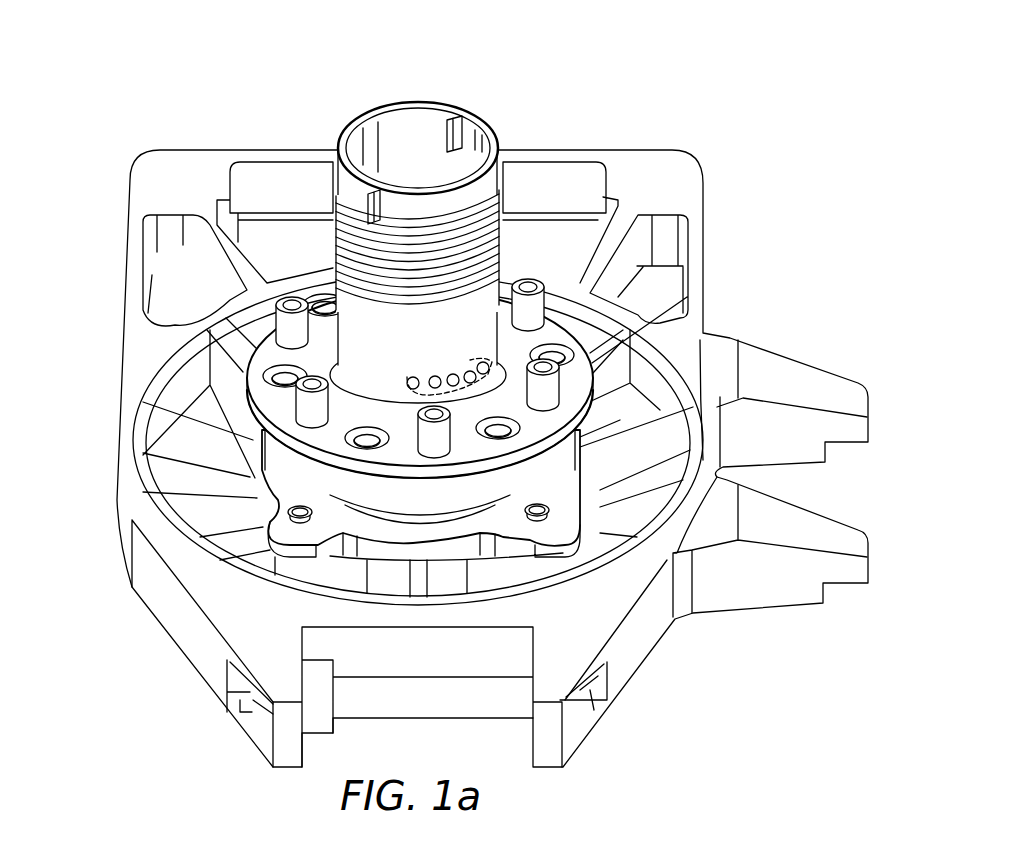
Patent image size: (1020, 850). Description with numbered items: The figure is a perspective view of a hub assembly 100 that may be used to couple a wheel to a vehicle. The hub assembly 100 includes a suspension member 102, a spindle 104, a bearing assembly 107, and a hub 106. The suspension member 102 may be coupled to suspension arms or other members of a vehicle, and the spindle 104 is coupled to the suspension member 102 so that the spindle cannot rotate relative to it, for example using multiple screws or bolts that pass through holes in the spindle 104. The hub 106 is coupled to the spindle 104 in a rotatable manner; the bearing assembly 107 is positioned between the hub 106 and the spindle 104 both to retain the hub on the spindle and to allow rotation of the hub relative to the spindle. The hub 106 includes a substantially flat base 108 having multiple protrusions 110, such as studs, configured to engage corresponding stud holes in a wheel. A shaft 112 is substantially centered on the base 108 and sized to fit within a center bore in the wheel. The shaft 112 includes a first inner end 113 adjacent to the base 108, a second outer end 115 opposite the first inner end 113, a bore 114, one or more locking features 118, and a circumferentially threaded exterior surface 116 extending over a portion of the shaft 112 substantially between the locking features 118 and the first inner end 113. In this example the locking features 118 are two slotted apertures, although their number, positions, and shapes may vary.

The hub assembly 100 is at (306, 62).
The suspension member 102 is at (180, 632).
The spindle 104 is at (537, 553).
The hub 106 is at (240, 412).
The bearing assembly 107 is at (400, 380).
The base 108 is at (335, 296).
The protrusions 110 is at (548, 298).
The shaft 112 is at (347, 133).
The first inner end 113 is at (375, 398).
The bore 114 is at (393, 128).
The second outer end 115 is at (483, 127).
The circumferentially threaded exterior surface 116 is at (503, 230).
The locking features 118 is at (432, 127).